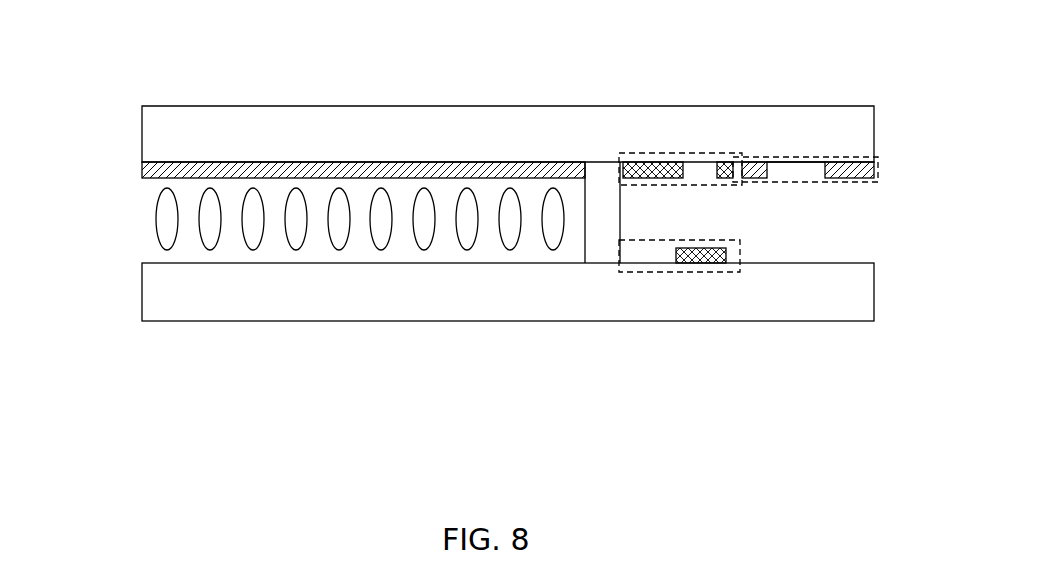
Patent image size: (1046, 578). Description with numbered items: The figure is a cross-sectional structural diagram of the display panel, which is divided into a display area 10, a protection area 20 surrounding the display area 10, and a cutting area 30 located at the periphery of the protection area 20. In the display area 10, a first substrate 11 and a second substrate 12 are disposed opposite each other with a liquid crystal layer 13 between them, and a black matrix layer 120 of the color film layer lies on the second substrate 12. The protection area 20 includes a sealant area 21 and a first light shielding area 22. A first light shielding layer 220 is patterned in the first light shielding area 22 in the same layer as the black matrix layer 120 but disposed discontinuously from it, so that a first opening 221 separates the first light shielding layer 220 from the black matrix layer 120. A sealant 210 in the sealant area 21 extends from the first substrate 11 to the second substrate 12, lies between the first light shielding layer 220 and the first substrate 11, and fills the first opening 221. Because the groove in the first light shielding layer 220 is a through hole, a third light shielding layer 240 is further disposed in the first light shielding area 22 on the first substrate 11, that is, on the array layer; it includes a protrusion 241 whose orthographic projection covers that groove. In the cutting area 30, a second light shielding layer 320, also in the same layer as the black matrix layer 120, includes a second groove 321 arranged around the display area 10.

The display area 10 is at (461, 266).
The first substrate 11 is at (468, 295).
The second substrate 12 is at (142, 133).
The black matrix layer 120 is at (142, 167).
The liquid crystal layer 13 is at (132, 187).
The protection area 20 is at (711, 225).
The sealant area 21 is at (590, 143).
The sealant 210 is at (602, 177).
The first light shielding area 22 is at (744, 104).
The first light shielding layer 220 is at (733, 151).
The first opening 221 is at (702, 170).
The third light shielding layer 240 is at (724, 305).
The protrusion 241 is at (728, 257).
The cutting area 30 is at (841, 271).
The second light shielding layer 320 is at (809, 152).
The second groove 321 is at (797, 173).